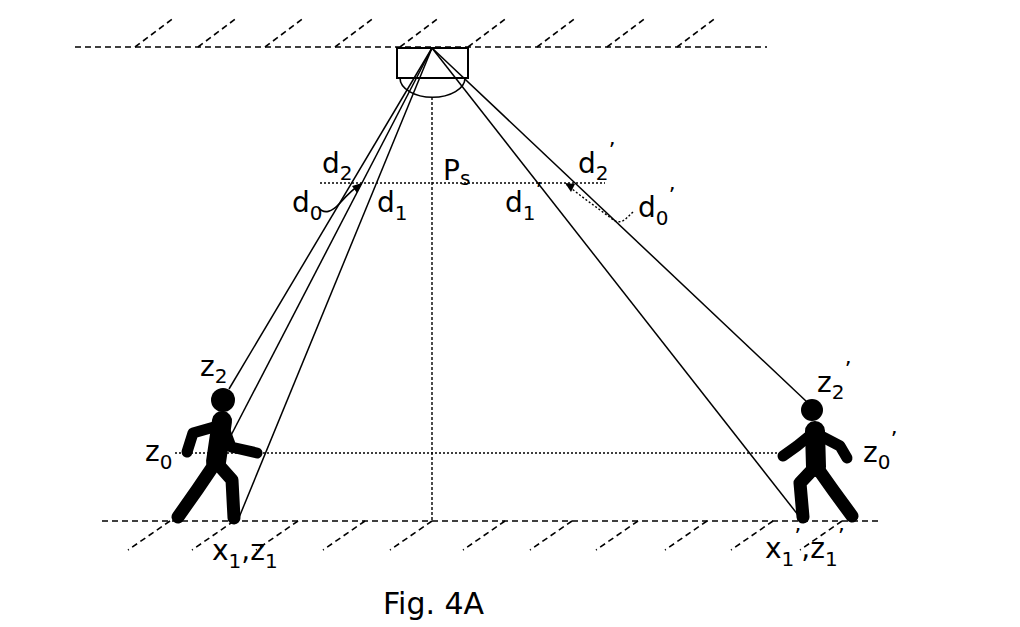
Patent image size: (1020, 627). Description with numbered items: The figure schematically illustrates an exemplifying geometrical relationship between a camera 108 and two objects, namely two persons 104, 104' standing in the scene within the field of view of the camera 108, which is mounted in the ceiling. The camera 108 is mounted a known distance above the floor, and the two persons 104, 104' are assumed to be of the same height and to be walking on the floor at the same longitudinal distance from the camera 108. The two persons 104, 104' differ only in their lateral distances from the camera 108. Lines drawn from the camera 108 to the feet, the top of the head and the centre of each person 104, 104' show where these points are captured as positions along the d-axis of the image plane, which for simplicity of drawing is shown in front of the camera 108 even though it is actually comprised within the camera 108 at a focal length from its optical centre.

The camera 108 is at (468, 55).
The person 104 is at (175, 445).
The person 104' is at (789, 454).